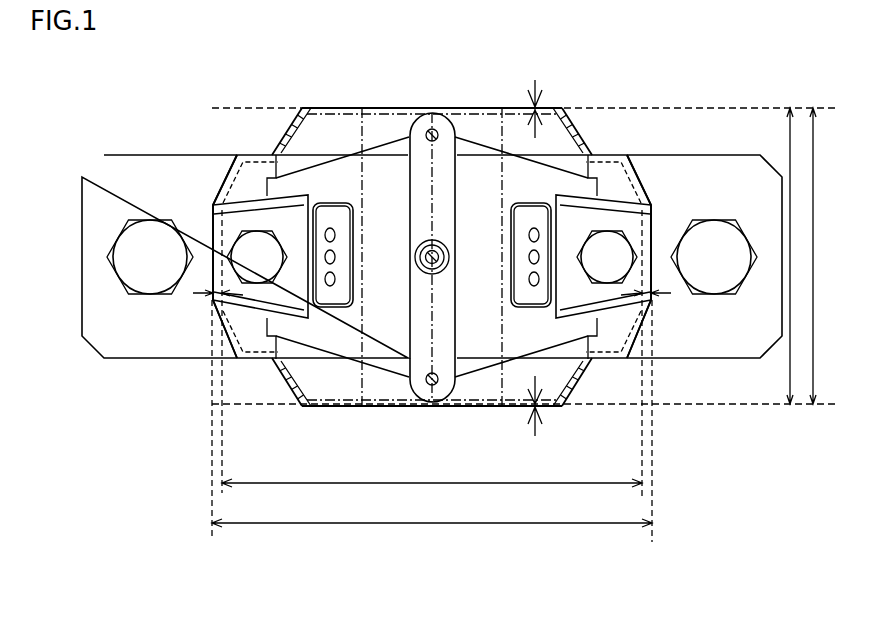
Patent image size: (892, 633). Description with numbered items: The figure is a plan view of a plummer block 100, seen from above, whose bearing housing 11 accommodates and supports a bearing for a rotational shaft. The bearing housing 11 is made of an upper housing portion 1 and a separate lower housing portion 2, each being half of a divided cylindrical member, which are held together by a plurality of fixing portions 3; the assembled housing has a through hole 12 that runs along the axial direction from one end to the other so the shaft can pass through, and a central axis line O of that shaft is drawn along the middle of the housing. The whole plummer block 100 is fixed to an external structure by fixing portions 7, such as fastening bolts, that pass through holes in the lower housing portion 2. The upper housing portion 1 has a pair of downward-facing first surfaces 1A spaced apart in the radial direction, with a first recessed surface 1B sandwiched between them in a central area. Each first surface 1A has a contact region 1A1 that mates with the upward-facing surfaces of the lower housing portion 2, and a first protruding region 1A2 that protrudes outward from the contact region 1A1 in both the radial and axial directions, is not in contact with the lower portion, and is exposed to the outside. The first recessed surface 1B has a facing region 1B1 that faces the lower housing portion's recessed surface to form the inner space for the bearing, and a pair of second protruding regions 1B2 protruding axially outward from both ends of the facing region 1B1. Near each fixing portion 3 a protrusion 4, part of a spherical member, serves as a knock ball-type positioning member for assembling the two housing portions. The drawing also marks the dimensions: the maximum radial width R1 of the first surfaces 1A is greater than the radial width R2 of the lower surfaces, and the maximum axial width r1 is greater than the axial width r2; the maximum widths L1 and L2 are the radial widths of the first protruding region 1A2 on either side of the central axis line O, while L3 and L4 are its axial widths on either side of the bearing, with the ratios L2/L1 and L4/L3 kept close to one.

The plummer block 100 is at (792, 50).
The bearing housing 11 is at (367, 53).
The upper housing portion 1 is at (347, 145).
The lower housing portion 2 is at (312, 150).
The first surface 1A is at (432, 316).
The contact region 1A1 is at (517, 133).
The first protruding region 1A2 is at (221, 175).
The first recessed surface 1B is at (432, 246).
The facing region 1B1 is at (484, 135).
The second protruding region 1B2 is at (449, 118).
The through hole 12 is at (370, 130).
The central axis line O is at (430, 106).
The fixing portion 3 is at (254, 250).
The protrusion 4 is at (283, 285).
The fixing portion 7 is at (150, 257).
The maximum width L1 is at (212, 300).
The maximum width L2 is at (652, 300).
The maximum width L3 is at (540, 108).
The maximum width L4 is at (538, 412).
The maximum width R1 is at (434, 525).
The width R2 is at (443, 485).
The maximum width r1 is at (812, 322).
The width r2 is at (790, 360).